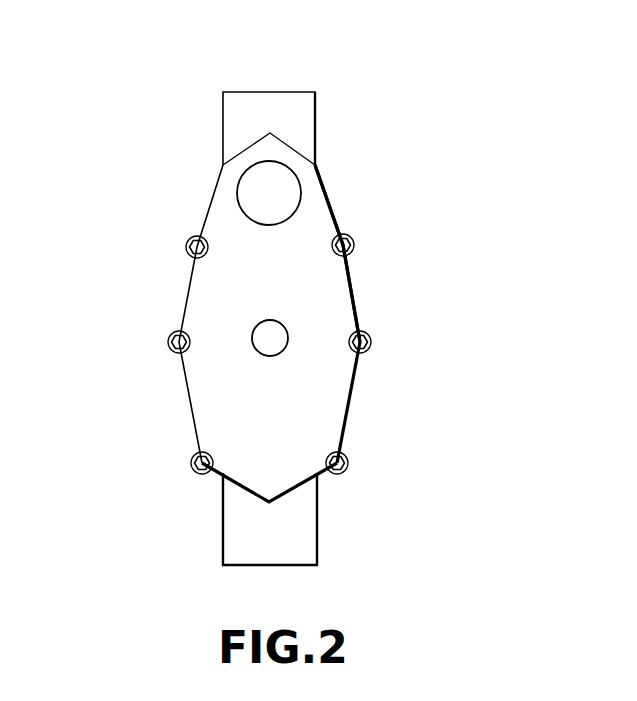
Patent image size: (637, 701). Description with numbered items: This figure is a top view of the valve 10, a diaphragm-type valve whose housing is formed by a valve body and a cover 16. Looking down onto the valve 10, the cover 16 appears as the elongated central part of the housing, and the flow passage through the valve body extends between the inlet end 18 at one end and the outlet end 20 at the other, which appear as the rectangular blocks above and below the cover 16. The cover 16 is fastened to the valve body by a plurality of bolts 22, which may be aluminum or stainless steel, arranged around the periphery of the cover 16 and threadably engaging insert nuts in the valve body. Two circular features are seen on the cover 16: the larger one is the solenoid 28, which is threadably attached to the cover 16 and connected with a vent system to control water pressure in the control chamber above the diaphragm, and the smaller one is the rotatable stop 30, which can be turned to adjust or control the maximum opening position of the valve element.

The valve 10 is at (158, 177).
The cover 16 is at (348, 297).
The inlet end 18 is at (290, 577).
The outlet end 20 is at (300, 78).
The bolts 22 is at (192, 238).
The solenoid 28 is at (290, 188).
The rotatable stop 30 is at (278, 345).